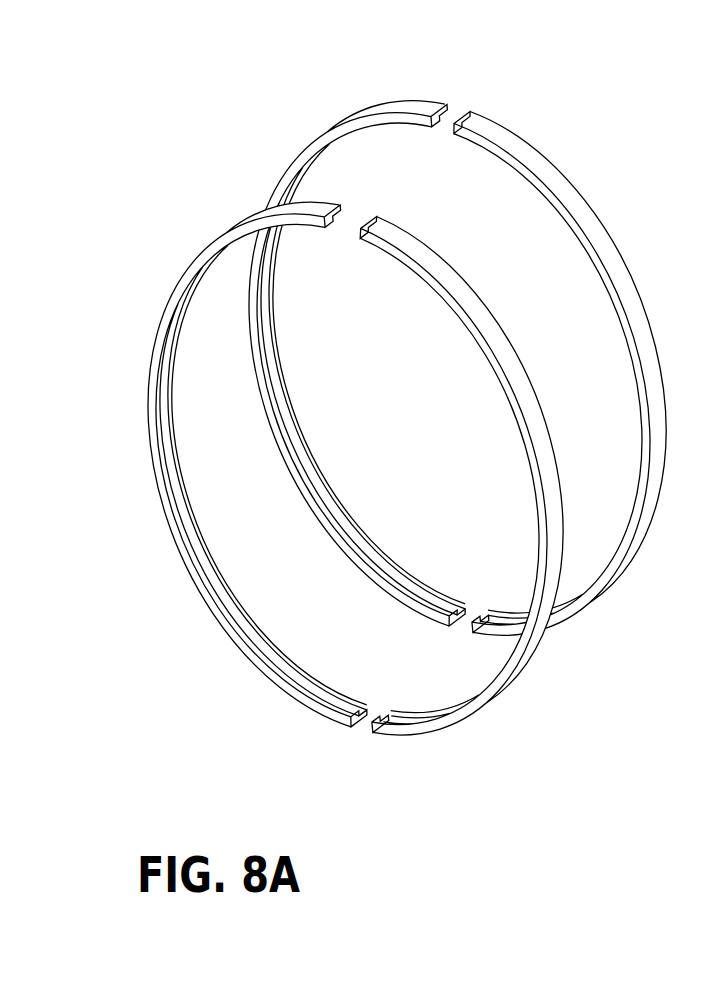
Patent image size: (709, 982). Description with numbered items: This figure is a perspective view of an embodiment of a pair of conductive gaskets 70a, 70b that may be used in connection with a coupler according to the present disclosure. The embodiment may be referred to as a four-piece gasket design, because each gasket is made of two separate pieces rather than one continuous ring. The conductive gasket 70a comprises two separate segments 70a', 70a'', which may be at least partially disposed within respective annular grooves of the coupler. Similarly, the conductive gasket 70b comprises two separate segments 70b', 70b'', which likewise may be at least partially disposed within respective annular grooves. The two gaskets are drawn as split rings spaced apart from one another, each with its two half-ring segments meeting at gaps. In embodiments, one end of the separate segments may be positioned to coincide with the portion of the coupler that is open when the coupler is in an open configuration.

The conductive gasket 70a is at (449, 331).
The segment 70a' is at (560, 374).
The segment 70a'' is at (357, 339).
The conductive gasket 70b is at (335, 468).
The segment 70b' is at (497, 475).
The segment 70b'' is at (246, 446).